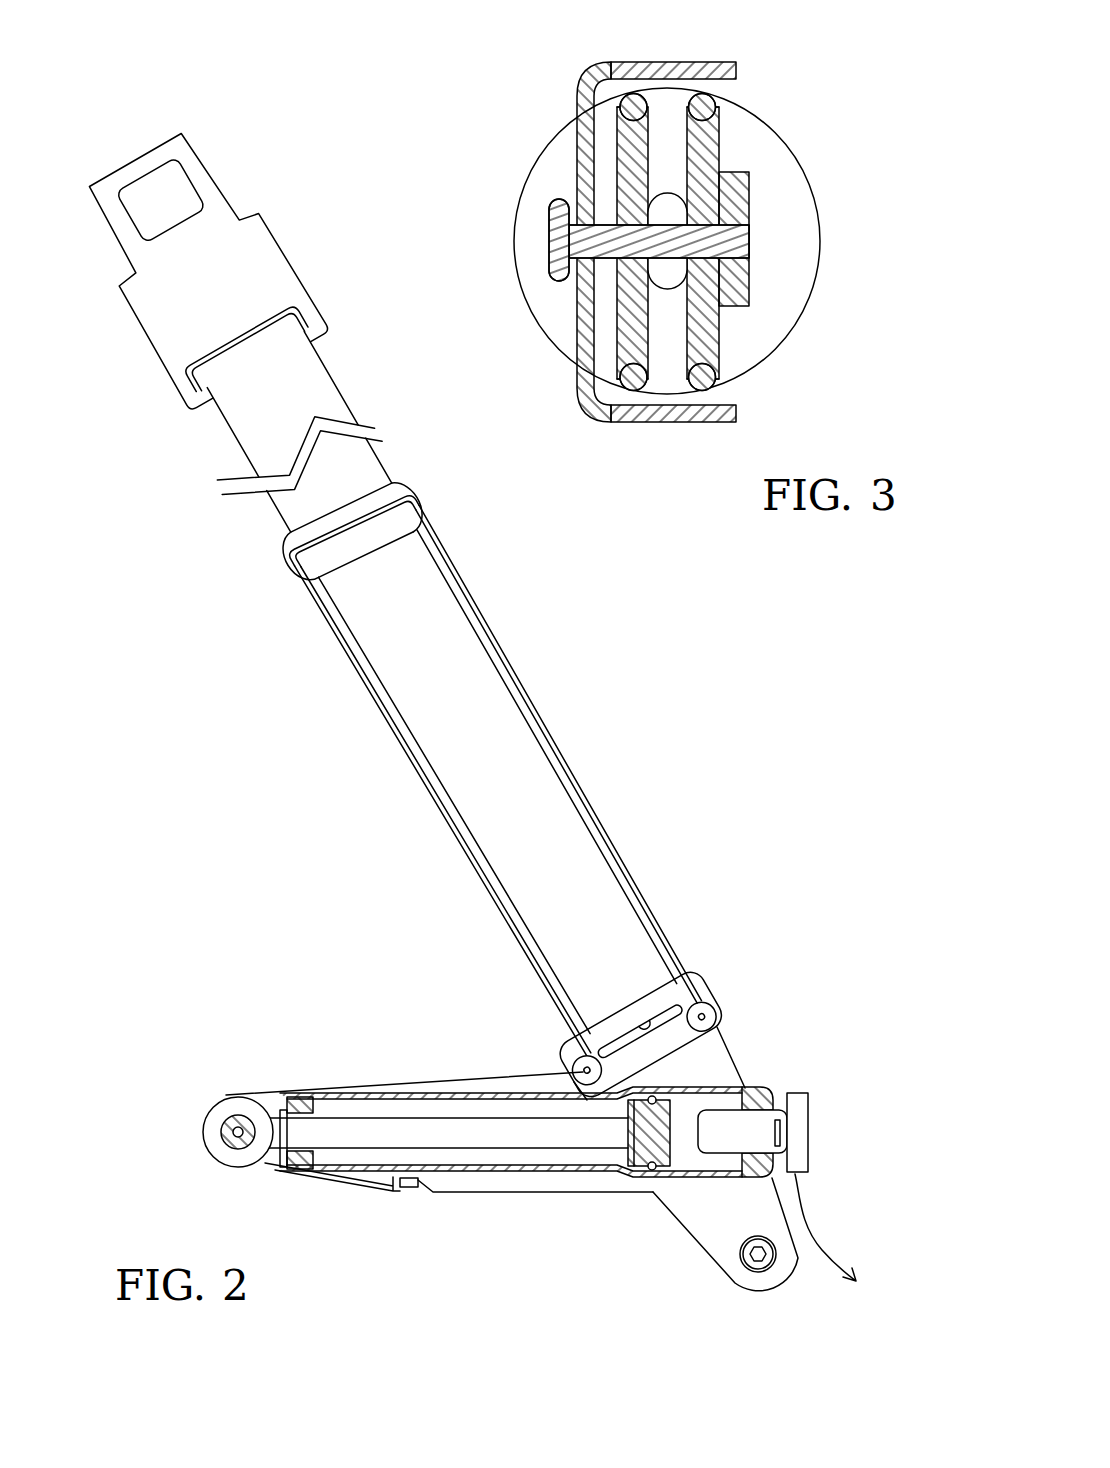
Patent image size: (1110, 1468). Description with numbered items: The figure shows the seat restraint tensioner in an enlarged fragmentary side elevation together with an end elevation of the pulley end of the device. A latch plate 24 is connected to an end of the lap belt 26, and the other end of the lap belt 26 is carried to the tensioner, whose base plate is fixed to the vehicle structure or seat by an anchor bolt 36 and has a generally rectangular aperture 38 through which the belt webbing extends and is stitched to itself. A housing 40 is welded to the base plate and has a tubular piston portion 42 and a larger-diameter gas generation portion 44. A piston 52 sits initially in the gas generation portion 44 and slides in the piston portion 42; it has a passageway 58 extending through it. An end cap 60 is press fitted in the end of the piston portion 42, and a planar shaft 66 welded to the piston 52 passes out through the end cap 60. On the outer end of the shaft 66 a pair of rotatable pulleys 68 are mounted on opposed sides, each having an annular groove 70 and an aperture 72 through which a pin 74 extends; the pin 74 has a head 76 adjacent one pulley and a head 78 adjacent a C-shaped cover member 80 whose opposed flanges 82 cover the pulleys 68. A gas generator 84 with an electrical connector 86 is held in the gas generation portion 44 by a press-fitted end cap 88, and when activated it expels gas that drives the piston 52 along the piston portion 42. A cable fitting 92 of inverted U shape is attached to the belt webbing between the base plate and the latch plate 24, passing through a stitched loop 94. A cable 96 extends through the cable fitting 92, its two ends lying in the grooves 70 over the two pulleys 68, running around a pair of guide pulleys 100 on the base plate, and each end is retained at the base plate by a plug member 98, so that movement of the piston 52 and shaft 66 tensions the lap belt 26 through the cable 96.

In FIG. 2, the latch tongue or plate 24 is at (165, 335).
In FIG. 2, the lap belt 26 is at (403, 688).
In FIG. 2, the anchor bolt 36 is at (750, 1262).
In FIG. 2, the aperture 38 is at (657, 1020).
In FIG. 2, the housing 40 is at (557, 1172).
In FIG. 3, the housing 40 is at (789, 337).
In FIG. 2, the piston portion 42 is at (500, 1170).
In FIG. 2, the gas generation portion 44 is at (685, 1178).
In FIG. 2, the piston 52 is at (637, 1160).
In FIG. 2, the passageway 58 is at (630, 1130).
In FIG. 2, the bushing or end cap 60 is at (290, 1172).
In FIG. 2, the shaft or rod 66 is at (370, 1130).
In FIG. 2, the rotatable pulleys 68 is at (215, 1150).
In FIG. 3, the rotatable pulleys 68 is at (620, 165).
In FIG. 3, the annular groove 70 is at (622, 109).
In FIG. 3, the aperture 72 is at (645, 255).
In FIG. 2, the pin 74 is at (232, 1135).
In FIG. 3, the pin 74 is at (605, 251).
In FIG. 3, the head 76 is at (746, 208).
In FIG. 3, the head 78 is at (552, 231).
In FIG. 3, the cover member 80 is at (577, 371).
In FIG. 3, the flanges 82 is at (665, 62).
In FIG. 2, the gas generator 84 is at (750, 1118).
In FIG. 2, the electrical connector 86 is at (802, 1118).
In FIG. 2, the generator support or end cap 88 is at (768, 1165).
In FIG. 2, the cable fitting 92 is at (408, 497).
In FIG. 2, the loop 94 is at (340, 562).
In FIG. 2, the cable 96 is at (430, 1083).
In FIG. 3, the cable 96 is at (628, 110).
In FIG. 2, the plug member 98 is at (408, 1190).
In FIG. 2, the guide pulleys 100 is at (575, 1063).